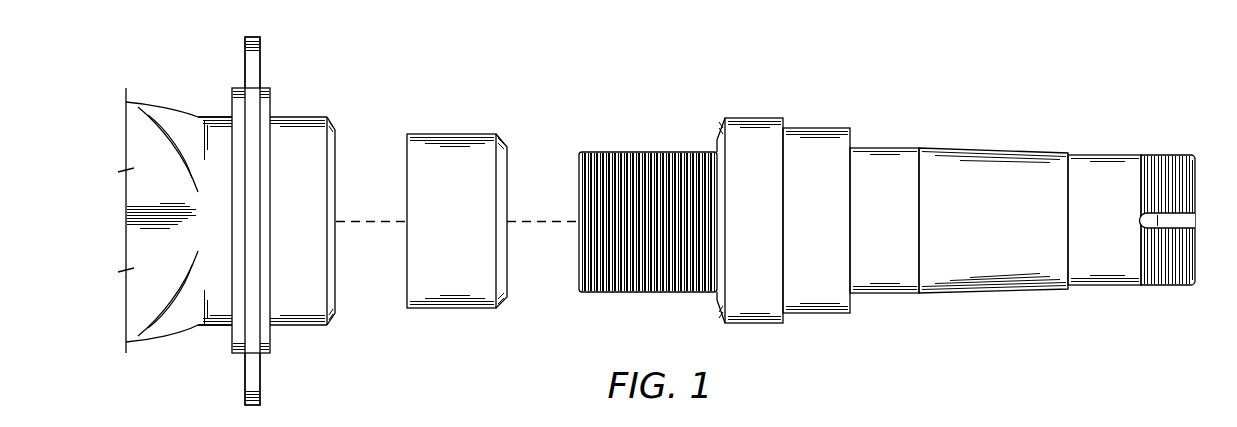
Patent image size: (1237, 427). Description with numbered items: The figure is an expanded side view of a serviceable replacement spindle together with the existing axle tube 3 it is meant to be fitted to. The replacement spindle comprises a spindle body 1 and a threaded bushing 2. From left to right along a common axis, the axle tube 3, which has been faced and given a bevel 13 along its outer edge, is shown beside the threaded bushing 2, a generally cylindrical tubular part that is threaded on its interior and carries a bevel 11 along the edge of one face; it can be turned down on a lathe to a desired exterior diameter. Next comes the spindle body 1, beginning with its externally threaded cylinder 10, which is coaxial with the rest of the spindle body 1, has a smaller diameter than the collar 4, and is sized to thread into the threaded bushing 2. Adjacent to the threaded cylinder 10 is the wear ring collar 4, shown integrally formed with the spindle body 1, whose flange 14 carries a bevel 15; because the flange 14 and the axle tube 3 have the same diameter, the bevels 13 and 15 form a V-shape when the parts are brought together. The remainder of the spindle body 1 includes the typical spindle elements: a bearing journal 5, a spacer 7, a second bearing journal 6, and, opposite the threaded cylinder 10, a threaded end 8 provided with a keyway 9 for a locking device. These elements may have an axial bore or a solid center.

The spindle body 1 is at (880, 53).
The threaded bushing 2 is at (436, 140).
The axle tube 3 is at (292, 125).
The wear ring collar 4 is at (825, 135).
The bearing journal 5 is at (873, 157).
The bearing journal 6 is at (1097, 173).
The spacer 7 is at (978, 173).
The threaded end 8 is at (1168, 163).
The keyway 9 is at (1188, 220).
The threaded cylinder 10 is at (635, 160).
The bevel 11 is at (503, 140).
The bevel 13 is at (332, 127).
The flange 14 is at (745, 125).
The bevel 15 is at (720, 130).